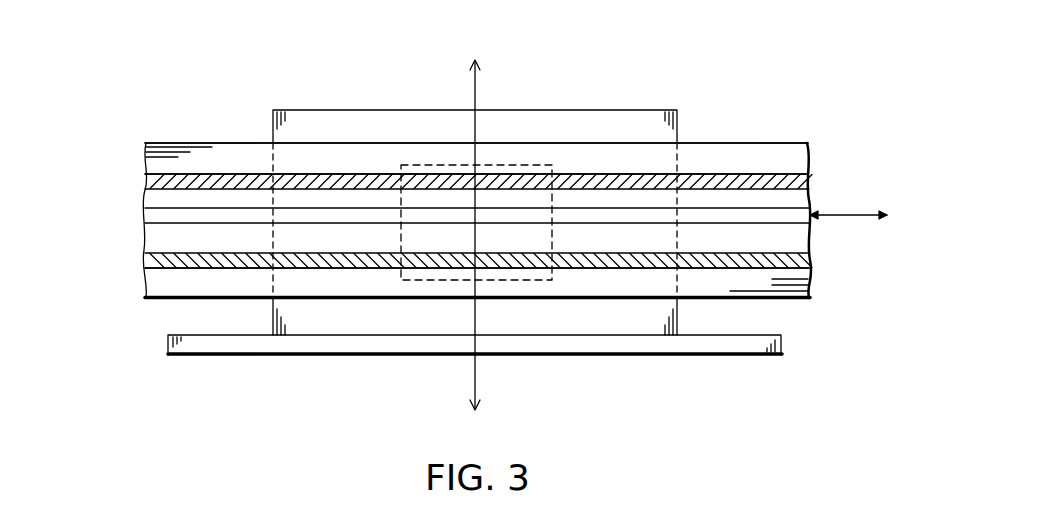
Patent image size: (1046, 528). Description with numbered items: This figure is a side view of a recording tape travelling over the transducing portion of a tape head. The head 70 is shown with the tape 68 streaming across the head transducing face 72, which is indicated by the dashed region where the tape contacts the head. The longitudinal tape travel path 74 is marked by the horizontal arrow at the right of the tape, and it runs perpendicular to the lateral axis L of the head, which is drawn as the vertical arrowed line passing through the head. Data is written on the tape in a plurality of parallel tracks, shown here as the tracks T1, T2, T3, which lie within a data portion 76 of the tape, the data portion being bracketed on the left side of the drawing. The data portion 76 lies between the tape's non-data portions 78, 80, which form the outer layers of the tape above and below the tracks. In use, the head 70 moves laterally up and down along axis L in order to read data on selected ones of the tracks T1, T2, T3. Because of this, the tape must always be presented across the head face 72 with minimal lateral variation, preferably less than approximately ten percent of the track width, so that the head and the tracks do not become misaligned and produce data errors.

The tape 68 is at (237, 143).
The head 70 is at (507, 109).
The head transducing face 72 is at (521, 162).
The longitudinal tape travel path 74 is at (868, 204).
The data portion 76 is at (126, 177).
The non-data portion 78 is at (709, 152).
The non-data portion 80 is at (783, 300).
The track T1 is at (756, 171).
The track T2 is at (810, 214).
The track T3 is at (811, 260).
The lateral axis L is at (475, 93).